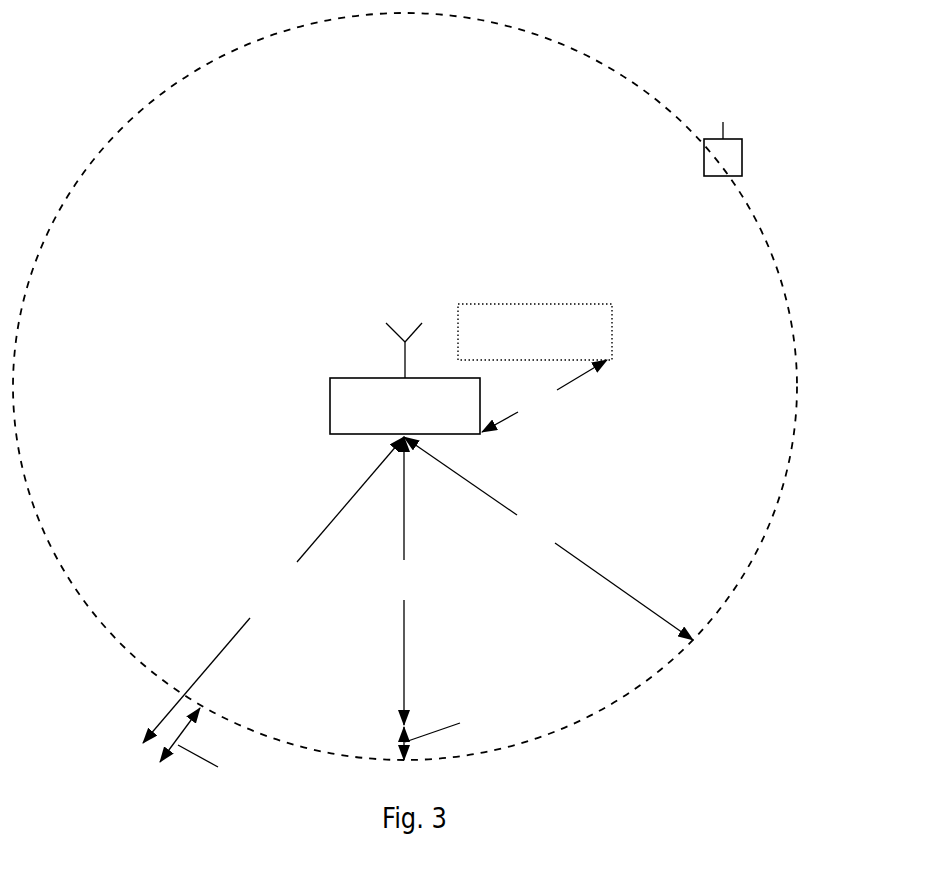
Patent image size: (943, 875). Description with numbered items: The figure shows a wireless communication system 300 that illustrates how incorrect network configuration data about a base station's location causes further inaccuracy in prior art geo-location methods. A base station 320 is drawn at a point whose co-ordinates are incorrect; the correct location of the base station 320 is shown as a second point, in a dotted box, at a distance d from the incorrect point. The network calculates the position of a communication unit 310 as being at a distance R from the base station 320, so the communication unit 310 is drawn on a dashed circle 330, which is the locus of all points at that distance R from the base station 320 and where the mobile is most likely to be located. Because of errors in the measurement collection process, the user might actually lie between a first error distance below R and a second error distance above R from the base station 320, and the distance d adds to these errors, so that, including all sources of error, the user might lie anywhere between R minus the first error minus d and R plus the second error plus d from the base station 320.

The wireless communication system 300 is at (120, 50).
The communication unit 310 is at (742, 155).
The base station 320 is at (330, 390).
The circle 330 is at (67, 583).